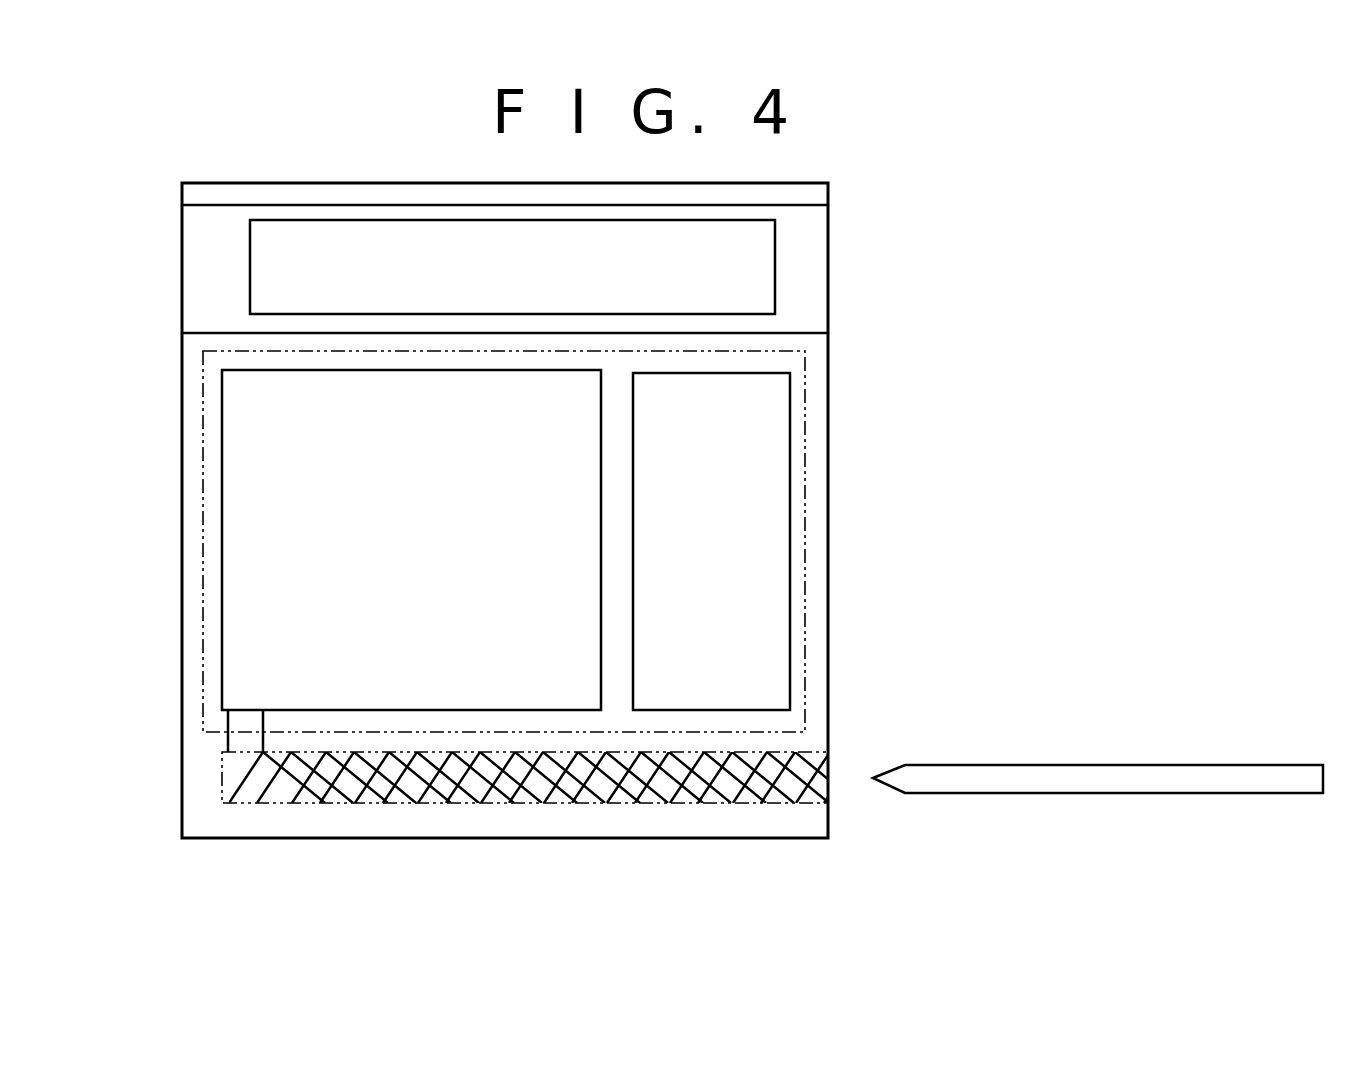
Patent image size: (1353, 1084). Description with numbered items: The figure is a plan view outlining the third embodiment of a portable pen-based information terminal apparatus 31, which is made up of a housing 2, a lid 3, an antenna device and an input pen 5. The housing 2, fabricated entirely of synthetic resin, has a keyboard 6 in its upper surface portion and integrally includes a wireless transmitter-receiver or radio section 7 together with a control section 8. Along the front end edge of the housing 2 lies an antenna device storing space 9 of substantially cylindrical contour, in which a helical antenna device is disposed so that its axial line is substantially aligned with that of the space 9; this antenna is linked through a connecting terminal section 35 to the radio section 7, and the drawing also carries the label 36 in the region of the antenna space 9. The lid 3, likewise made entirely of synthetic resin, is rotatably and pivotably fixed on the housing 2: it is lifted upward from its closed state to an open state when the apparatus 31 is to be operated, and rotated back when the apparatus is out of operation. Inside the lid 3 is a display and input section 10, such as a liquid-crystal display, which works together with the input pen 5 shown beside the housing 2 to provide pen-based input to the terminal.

The housing 2 is at (822, 466).
The lid 3 is at (822, 275).
The input pen 5 is at (1107, 777).
The keyboard 6 is at (805, 412).
The radio section 7 is at (242, 533).
The control section 8 is at (775, 520).
The antenna device storing space 9 is at (660, 798).
The display and input section 10 is at (341, 232).
The portable pen-based information terminal apparatus 31 is at (495, 798).
The connecting terminal section 35 is at (248, 720).
The antenna conductor 36 is at (782, 798).